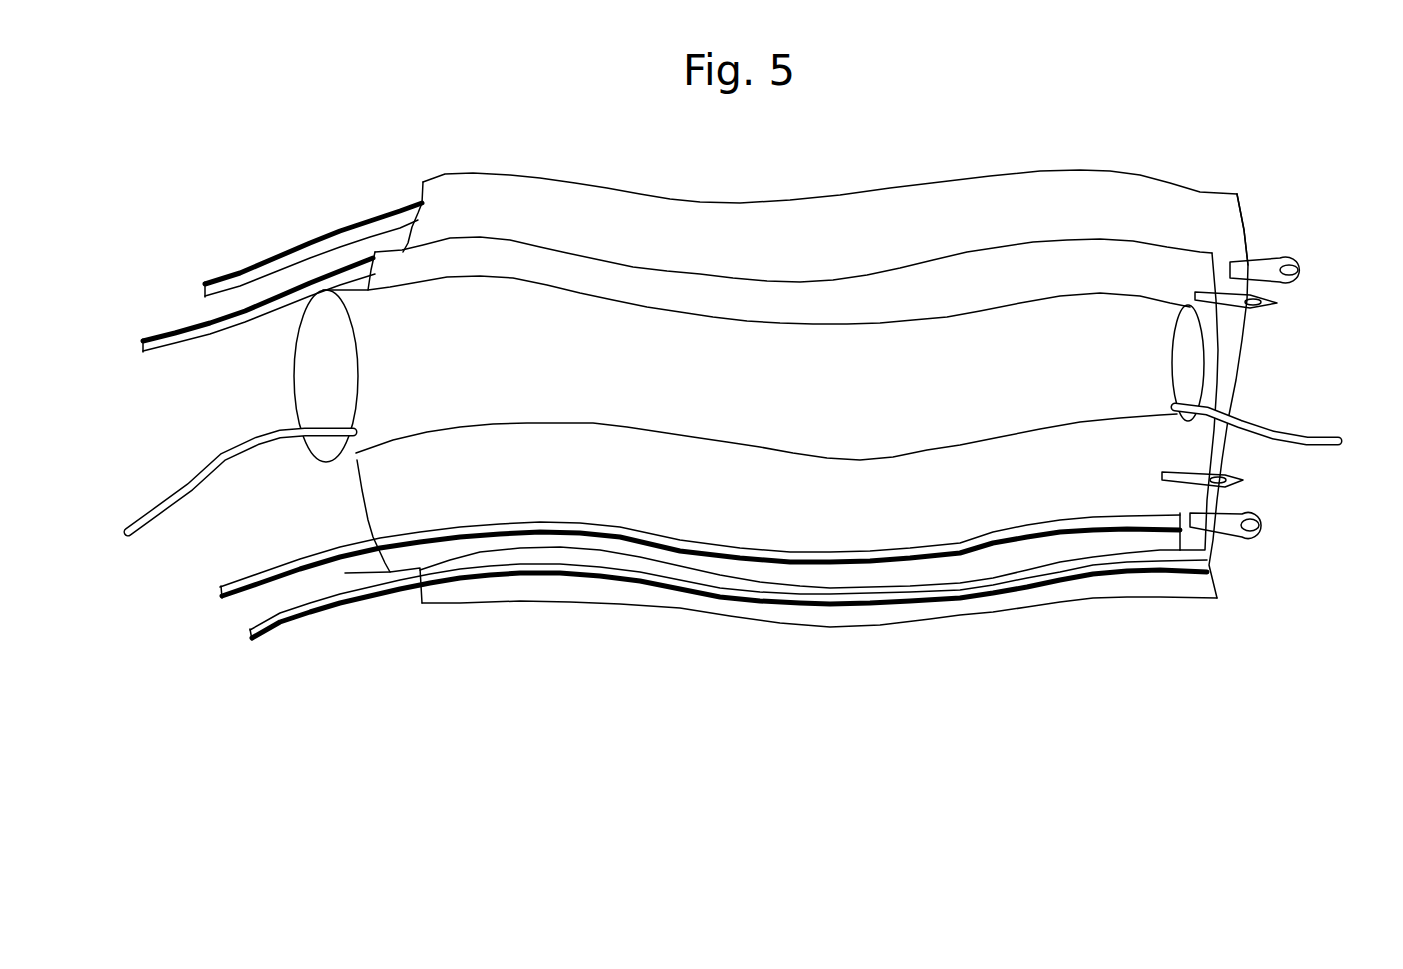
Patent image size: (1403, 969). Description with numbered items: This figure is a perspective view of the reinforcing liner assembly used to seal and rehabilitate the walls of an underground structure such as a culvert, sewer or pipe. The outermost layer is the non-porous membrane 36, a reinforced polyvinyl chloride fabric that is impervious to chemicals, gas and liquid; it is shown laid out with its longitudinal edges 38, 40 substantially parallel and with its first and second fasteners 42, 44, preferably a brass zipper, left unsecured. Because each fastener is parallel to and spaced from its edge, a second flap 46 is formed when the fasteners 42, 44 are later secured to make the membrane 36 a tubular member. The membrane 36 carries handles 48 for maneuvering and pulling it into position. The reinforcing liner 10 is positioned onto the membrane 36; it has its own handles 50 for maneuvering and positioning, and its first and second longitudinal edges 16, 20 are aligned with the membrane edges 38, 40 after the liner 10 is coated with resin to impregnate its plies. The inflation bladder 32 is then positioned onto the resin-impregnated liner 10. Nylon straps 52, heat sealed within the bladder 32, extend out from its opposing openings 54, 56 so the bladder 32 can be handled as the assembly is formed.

The reinforcing liner 10 is at (1037, 270).
The first longitudinal edge 16 is at (550, 548).
The second longitudinal edge 20 is at (805, 278).
The inflation bladder 32 is at (1119, 296).
The non-porous membrane 36 is at (987, 194).
The longitudinal edge 38 is at (744, 200).
The longitudinal edge 40 is at (608, 603).
The first fastener 42 is at (371, 223).
The second fastener 44 is at (350, 604).
The second flap 46 is at (459, 600).
The handles 48 is at (1326, 257).
The handles 50 is at (1293, 309).
The nylon straps 52 is at (147, 527).
The opening 54 is at (1197, 360).
The opening 56 is at (291, 381).